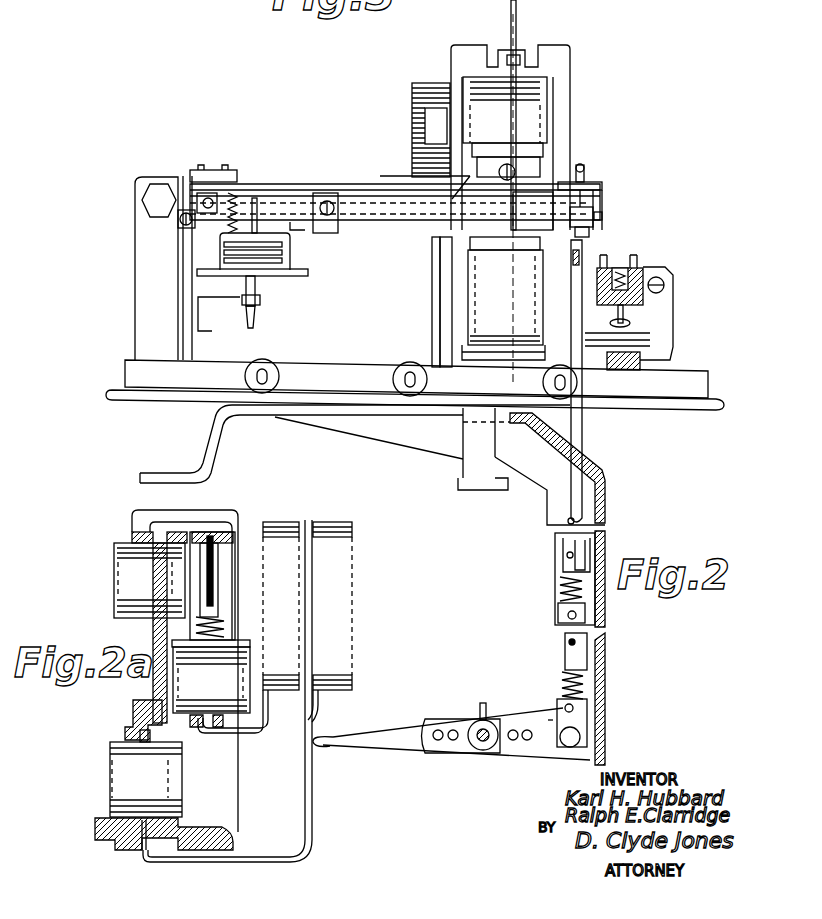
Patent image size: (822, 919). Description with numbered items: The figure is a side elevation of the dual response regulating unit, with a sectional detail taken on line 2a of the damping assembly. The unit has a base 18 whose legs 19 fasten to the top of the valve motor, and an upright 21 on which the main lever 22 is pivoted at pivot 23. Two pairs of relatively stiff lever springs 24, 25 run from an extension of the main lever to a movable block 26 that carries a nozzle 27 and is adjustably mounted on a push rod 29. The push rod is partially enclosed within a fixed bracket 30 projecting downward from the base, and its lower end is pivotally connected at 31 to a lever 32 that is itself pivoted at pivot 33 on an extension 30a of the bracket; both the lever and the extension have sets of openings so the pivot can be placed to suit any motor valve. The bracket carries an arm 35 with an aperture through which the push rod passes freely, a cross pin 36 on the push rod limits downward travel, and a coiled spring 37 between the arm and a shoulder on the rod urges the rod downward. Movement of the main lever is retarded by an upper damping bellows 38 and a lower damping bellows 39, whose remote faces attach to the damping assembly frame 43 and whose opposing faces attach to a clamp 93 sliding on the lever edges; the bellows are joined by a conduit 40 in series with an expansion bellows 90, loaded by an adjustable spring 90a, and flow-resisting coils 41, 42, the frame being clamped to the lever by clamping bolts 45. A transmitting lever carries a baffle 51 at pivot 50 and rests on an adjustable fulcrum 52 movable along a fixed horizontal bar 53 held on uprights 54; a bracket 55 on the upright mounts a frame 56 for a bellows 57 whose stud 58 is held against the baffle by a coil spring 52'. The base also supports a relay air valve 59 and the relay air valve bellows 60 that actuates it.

In FIG. 2, the section line 2a— 2a is at (513, 18).
In FIG. 2, the base 18 is at (683, 393).
In FIG. 2, the legs 19 is at (202, 441).
In FIG. 2, the upright 21 is at (147, 285).
In FIG. 2, the main lever 22 is at (533, 211).
In FIG. 2, the pivot 23 is at (160, 200).
In FIG. 2, the lever springs 24 is at (358, 184).
In FIG. 2, the lever springs 25 is at (286, 226).
In FIG. 2, the movable block 26 is at (597, 206).
In FIG. 2, the nozzle 27 is at (594, 228).
In FIG. 2, the push rod 29 is at (578, 430).
In FIG. 2, the fixed bracket 30 is at (605, 508).
In FIG. 2, the bracket extension 30a is at (560, 710).
In FIG. 2, the pivotal connection 31 is at (568, 742).
In FIG. 2, the lever 32 is at (420, 740).
In FIG. 2, the pivot 33 is at (483, 740).
In FIG. 2, the arm 35 is at (558, 572).
In FIG. 2, the cross pin 36 is at (567, 555).
In FIG. 2, the coiled spring 37 is at (560, 578).
In FIG. 2, the upper damping bellows 38 is at (505, 127).
In FIG. 2A, the upper damping bellows 38 is at (130, 545).
In FIG. 2, the lower damping bellows 39 is at (505, 291).
In FIG. 2A, the lower damping bellows 39 is at (110, 750).
In FIG. 2, the conduit 40 is at (516, 57).
In FIG. 2A, the conduit 40 is at (236, 522).
In FIG. 2, the flow-resisting coil 41 is at (432, 84).
In FIG. 2A, the flow-resisting coil 41 is at (244, 627).
In FIG. 2A, the flow-resisting coil 42 is at (330, 622).
In FIG. 2, the damping assembly frame 43 is at (562, 110).
In FIG. 2, the clamping bolts 45 is at (470, 345).
In FIG. 2, the pivot 50 is at (206, 204).
In FIG. 2, the baffle 51 is at (428, 186).
In FIG. 2, the fulcrum 52 is at (354, 225).
In FIG. 2, the coil spring 52' is at (252, 188).
In FIG. 2, the fixed horizontal bar 53 is at (420, 238).
In FIG. 2, the uprights 54 is at (240, 345).
In FIG. 2, the bracket 55 is at (220, 290).
In FIG. 2, the frame 56 is at (290, 258).
In FIG. 2, the bellows 57 is at (273, 272).
In FIG. 2, the stud 58 is at (262, 207).
In FIG. 2, the relay air valve 59 is at (650, 270).
In FIG. 2, the relay air valve bellows 60 is at (655, 334).
In FIG. 2A, the expansion bellows 90 is at (180, 716).
In FIG. 2A, the spring 90a is at (222, 622).
In FIG. 2A, the clamp 93 is at (153, 690).